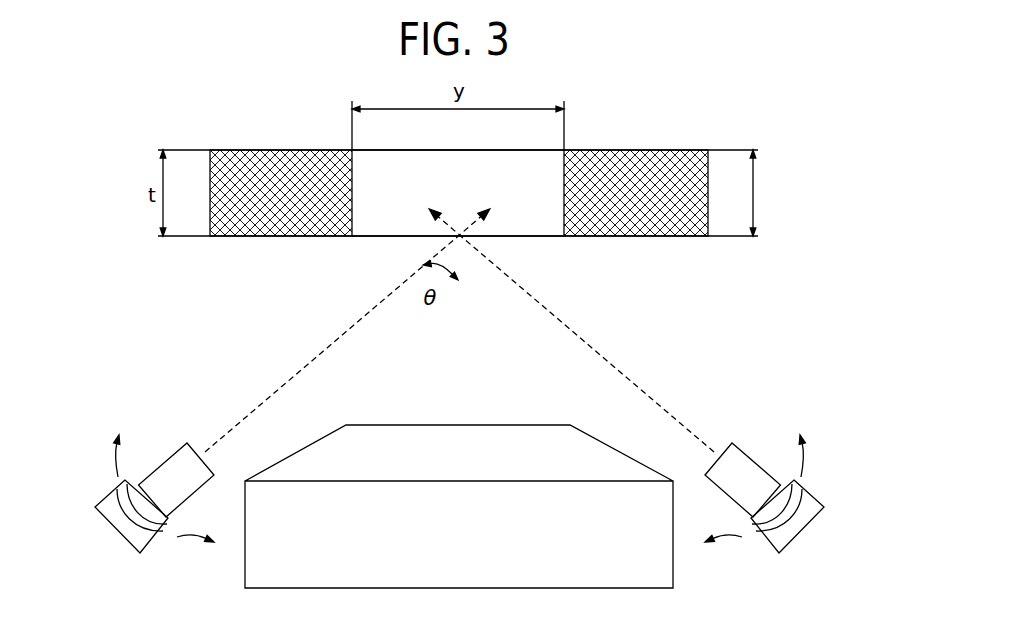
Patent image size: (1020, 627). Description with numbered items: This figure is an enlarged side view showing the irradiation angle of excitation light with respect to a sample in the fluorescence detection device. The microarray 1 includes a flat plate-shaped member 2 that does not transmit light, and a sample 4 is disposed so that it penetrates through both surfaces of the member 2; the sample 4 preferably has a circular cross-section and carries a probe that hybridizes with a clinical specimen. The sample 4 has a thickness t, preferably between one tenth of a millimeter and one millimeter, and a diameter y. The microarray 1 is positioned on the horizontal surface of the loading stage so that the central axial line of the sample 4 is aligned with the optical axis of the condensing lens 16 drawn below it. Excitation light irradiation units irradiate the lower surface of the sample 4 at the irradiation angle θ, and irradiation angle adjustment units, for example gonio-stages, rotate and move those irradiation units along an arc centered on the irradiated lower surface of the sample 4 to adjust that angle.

The microarray 1 is at (265, 237).
The member 2 is at (650, 158).
The sample 4 is at (530, 218).
The condensing lens 16 is at (257, 558).